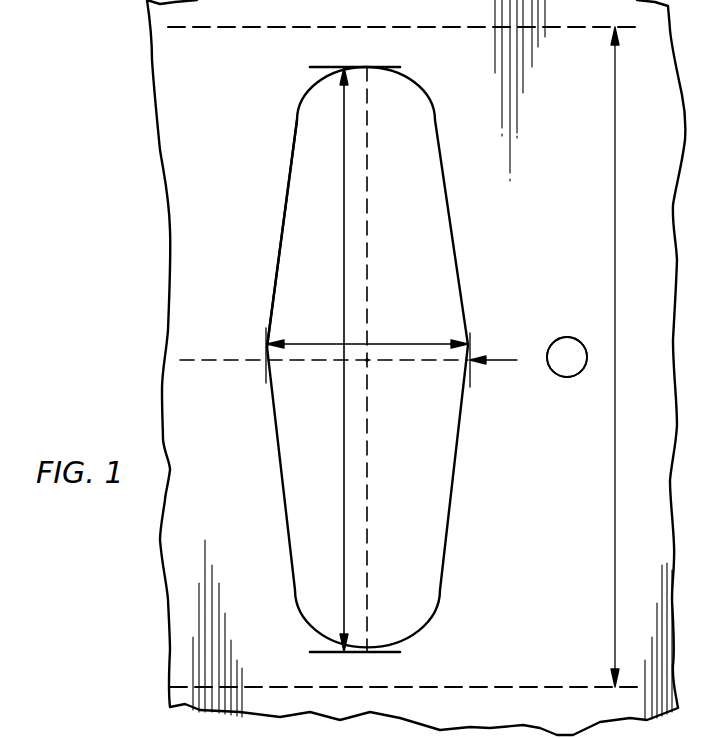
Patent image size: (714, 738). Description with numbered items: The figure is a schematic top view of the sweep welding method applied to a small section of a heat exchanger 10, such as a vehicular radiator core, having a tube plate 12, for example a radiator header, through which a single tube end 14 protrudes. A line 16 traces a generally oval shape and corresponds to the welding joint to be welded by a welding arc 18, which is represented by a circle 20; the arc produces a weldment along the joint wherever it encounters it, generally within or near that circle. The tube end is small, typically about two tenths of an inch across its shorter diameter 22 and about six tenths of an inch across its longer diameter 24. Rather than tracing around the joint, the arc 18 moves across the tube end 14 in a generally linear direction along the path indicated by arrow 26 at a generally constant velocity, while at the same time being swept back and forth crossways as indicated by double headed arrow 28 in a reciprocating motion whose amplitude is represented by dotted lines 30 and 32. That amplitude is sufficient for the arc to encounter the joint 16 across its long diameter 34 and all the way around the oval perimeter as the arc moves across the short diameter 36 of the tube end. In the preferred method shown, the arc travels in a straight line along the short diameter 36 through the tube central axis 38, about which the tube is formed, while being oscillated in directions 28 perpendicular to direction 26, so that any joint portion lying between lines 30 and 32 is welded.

The heat exchanger section 10 is at (158, 206).
The tube plate 12 is at (223, 102).
The tube end 14 is at (274, 439).
The welding joint 16 is at (283, 238).
The welding arc 18 is at (578, 339).
The circle 20 is at (562, 378).
The shorter diameter 22 is at (420, 343).
The longer diameter 24 is at (344, 281).
The arrow 26 is at (502, 356).
The double headed arrow 28 is at (620, 133).
The dotted line 30 is at (478, 43).
The dotted line 32 is at (558, 687).
The long diameter 34 is at (367, 240).
The short diameter 36 is at (455, 360).
The tube central axis 38 is at (370, 360).